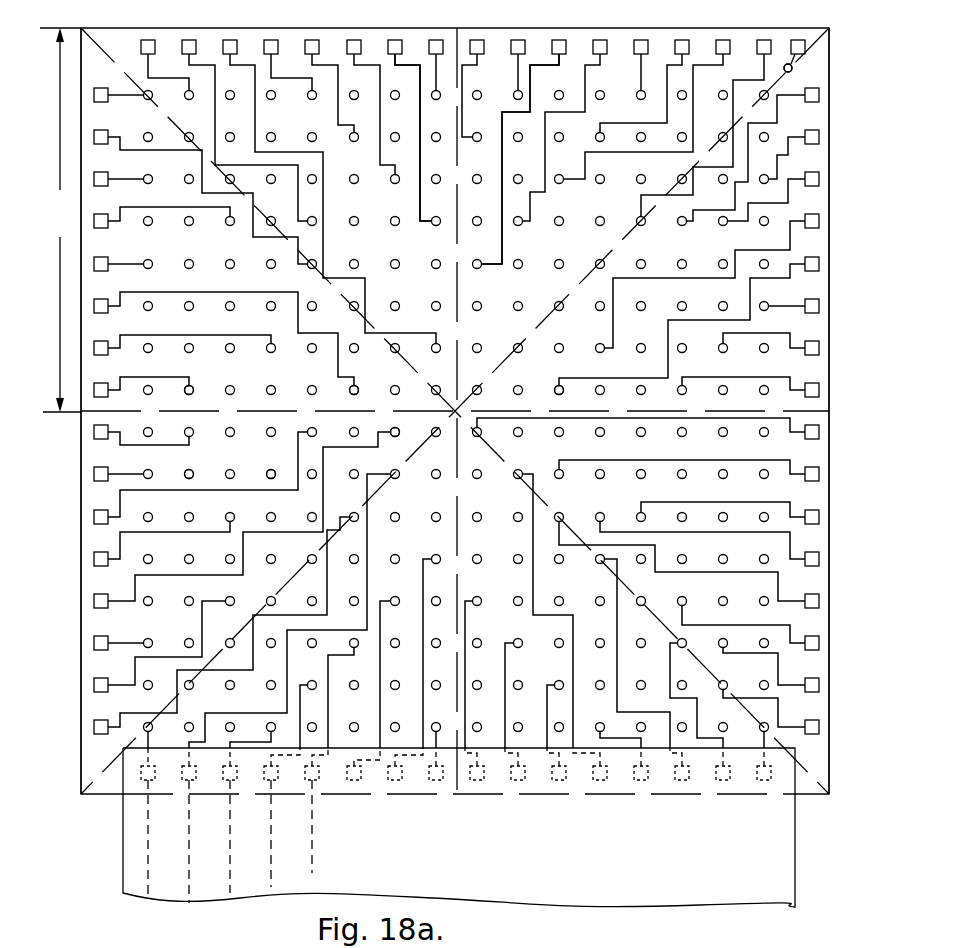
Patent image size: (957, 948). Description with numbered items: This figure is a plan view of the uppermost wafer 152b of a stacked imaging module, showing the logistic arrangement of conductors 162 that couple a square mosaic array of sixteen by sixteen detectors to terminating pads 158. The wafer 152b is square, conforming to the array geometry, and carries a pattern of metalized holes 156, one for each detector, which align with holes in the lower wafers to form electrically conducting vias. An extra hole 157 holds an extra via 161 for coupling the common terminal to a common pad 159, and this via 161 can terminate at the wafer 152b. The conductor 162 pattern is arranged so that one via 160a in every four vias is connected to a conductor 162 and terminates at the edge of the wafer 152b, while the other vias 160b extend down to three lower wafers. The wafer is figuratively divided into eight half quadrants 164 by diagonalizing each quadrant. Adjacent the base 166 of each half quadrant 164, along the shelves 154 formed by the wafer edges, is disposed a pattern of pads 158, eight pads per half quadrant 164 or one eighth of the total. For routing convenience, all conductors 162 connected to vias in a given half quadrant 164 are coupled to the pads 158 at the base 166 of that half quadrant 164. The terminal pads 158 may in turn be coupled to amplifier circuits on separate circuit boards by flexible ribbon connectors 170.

The uppermost wafer 152b is at (834, 122).
The shelf 154 is at (830, 494).
The metalized hole 156 is at (350, 387).
The extra hole 157 is at (792, 69).
The terminal pad 158 is at (97, 680).
The common pad 159 is at (830, 41).
The via 160a is at (398, 429).
The via 160b is at (270, 470).
The extra via 161 is at (784, 67).
The conductor 162 is at (362, 278).
The half quadrant 164 is at (150, 124).
The base 166 is at (60, 220).
The flexible ribbon connector 170 is at (478, 853).